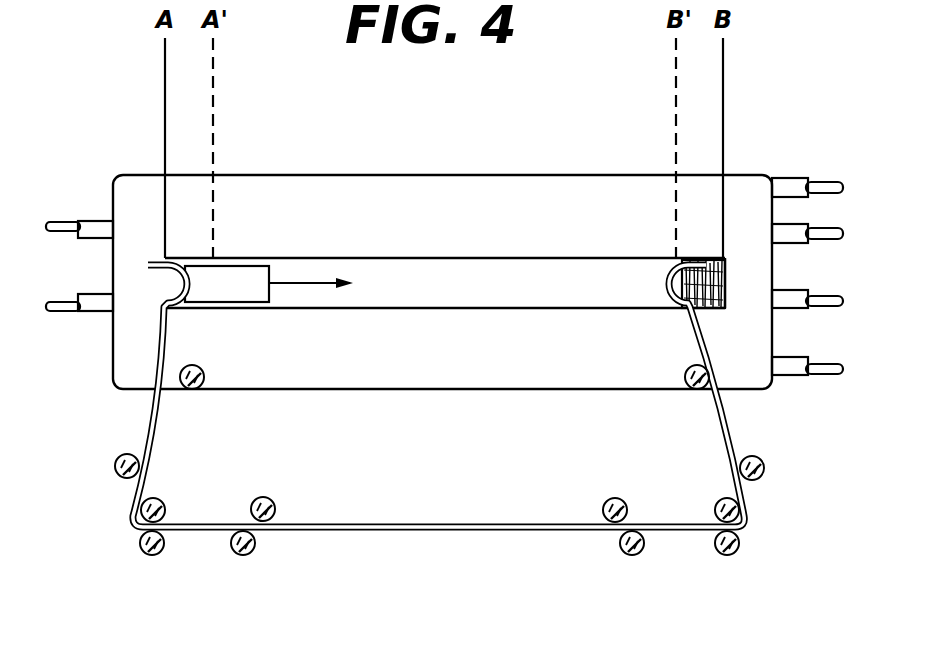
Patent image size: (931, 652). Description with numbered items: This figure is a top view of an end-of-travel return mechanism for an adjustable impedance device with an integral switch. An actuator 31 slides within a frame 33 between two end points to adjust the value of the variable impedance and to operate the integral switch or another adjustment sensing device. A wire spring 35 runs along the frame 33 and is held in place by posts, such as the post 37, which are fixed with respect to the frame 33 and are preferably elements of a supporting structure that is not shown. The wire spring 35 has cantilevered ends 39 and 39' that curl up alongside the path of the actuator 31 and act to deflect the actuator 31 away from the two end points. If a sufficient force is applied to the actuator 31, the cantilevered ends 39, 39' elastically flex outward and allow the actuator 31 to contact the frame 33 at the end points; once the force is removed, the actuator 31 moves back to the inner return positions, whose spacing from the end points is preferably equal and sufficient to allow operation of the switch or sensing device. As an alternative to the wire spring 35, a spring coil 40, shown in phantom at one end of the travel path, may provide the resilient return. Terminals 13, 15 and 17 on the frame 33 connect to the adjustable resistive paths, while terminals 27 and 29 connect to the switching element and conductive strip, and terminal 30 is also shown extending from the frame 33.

The terminal 13 is at (55, 312).
The terminal 15 is at (814, 364).
The terminal 17 is at (813, 296).
The terminal 27 is at (76, 188).
The terminal 29 is at (818, 180).
The lead pin 30 is at (825, 224).
The actuator 31 is at (241, 272).
The frame 33 is at (428, 205).
The wire spring 35 is at (402, 532).
The post 37 is at (143, 551).
The cantilevered end 39 is at (108, 396).
The cantilevered end 39' is at (762, 396).
The spring coil 40 is at (722, 270).